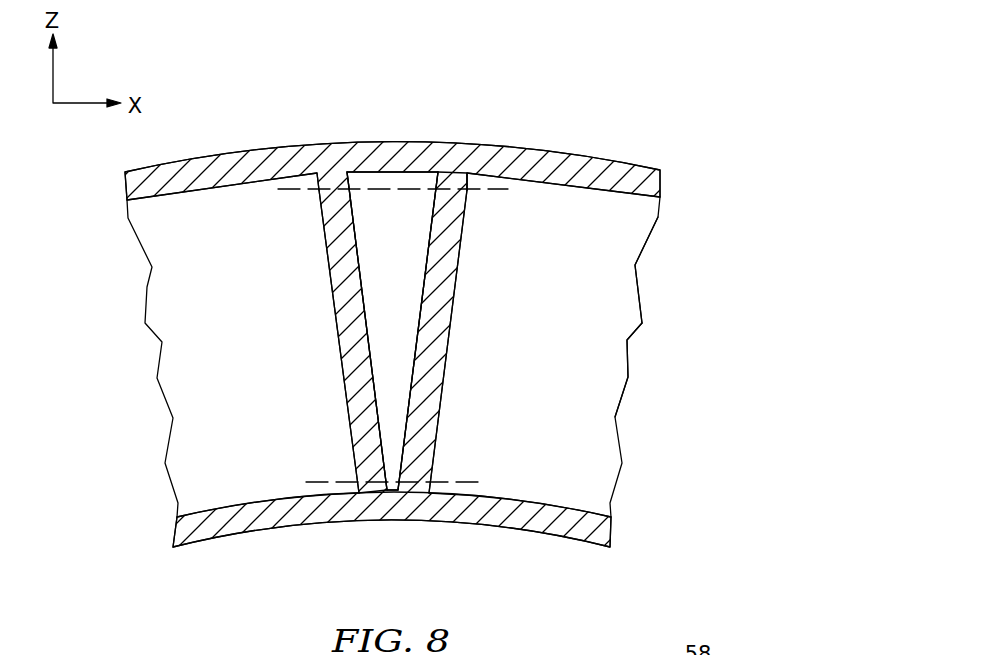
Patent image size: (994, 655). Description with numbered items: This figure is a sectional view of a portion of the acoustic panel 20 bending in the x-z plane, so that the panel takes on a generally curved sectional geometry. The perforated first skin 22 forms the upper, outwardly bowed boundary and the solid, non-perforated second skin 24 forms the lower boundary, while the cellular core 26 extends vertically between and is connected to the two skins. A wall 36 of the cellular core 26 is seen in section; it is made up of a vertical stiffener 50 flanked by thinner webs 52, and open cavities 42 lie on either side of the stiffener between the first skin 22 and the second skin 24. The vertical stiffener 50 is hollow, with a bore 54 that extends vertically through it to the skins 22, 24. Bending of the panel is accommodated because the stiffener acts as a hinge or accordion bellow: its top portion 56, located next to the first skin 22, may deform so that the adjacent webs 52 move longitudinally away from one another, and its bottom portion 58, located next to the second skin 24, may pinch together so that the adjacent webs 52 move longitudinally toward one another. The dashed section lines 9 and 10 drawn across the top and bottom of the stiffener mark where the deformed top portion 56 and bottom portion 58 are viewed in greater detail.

The acoustic panel 20 is at (394, 290).
The first skin 22 is at (663, 183).
The second skin 24 is at (615, 533).
The cellular core 26 is at (655, 301).
The wall 36 is at (637, 363).
The cavity 42 is at (208, 297).
The vertical stiffener 50 is at (334, 353).
The web 52 is at (203, 415).
The bore 54 is at (383, 250).
The top portion 56 is at (478, 176).
The bottom portion 58 is at (352, 494).
The section line 9- 9 is at (508, 236).
The section line 10- 10 is at (480, 546).